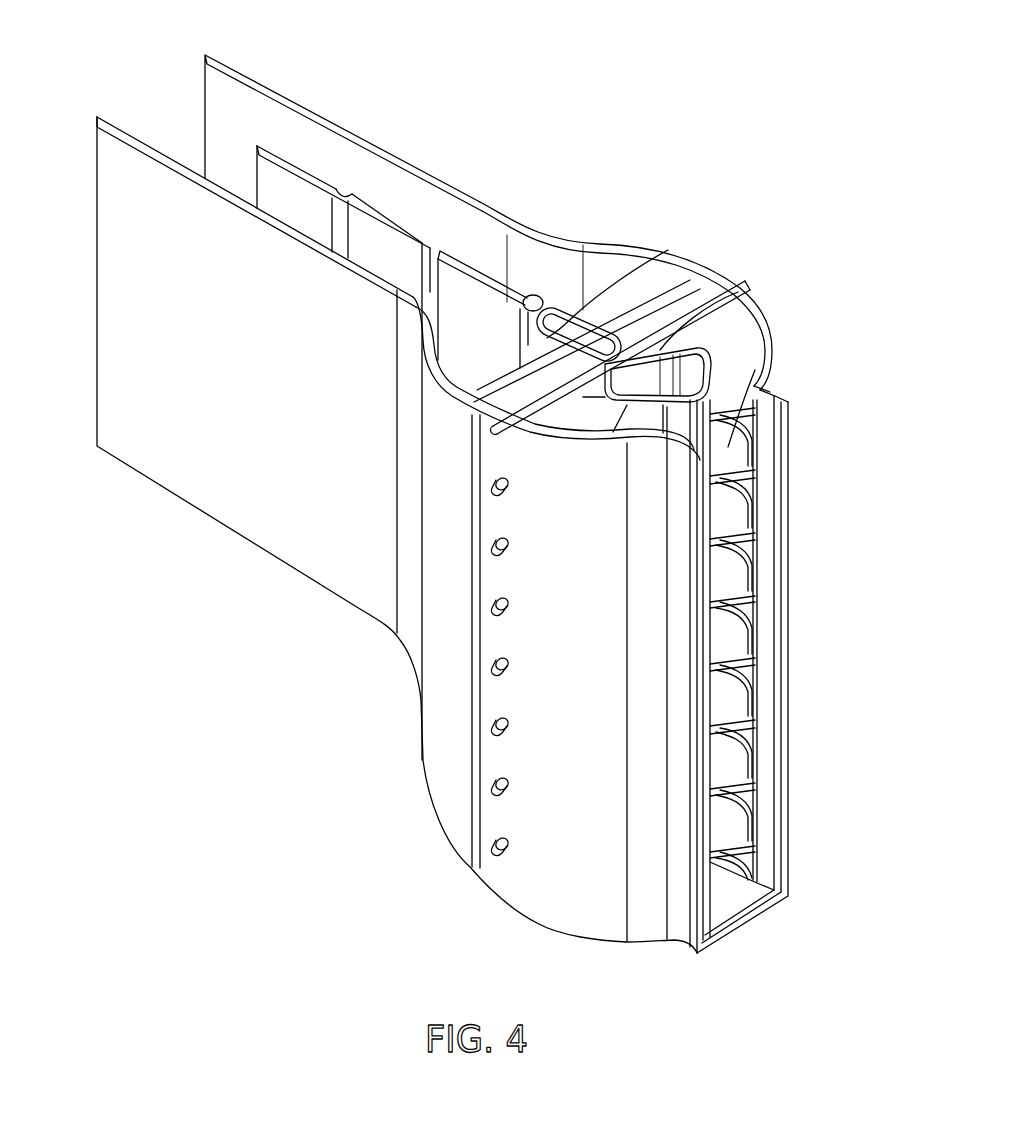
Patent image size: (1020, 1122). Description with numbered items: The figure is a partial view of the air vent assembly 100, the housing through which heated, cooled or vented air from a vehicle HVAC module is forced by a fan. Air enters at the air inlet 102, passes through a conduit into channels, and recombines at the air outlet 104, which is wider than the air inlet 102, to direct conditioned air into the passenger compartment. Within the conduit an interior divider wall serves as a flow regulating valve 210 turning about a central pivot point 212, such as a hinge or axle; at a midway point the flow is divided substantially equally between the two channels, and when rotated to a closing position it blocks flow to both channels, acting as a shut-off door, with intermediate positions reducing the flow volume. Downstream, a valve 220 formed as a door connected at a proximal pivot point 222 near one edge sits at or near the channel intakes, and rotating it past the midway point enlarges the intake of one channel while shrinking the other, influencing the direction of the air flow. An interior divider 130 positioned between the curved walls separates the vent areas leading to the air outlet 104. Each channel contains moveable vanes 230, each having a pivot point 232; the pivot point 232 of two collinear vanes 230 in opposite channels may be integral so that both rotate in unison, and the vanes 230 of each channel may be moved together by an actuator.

The air vent assembly 100 is at (700, 78).
The air inlet 102 is at (177, 130).
The air outlet 104 is at (770, 428).
The interior divider 130 is at (668, 248).
The flow regulating valve 210 is at (395, 223).
The pivot point 212 is at (346, 191).
The valve 220 is at (461, 259).
The pivot point 222 is at (592, 330).
The moveable vanes 230 is at (813, 280).
The pivot point 232 is at (713, 292).